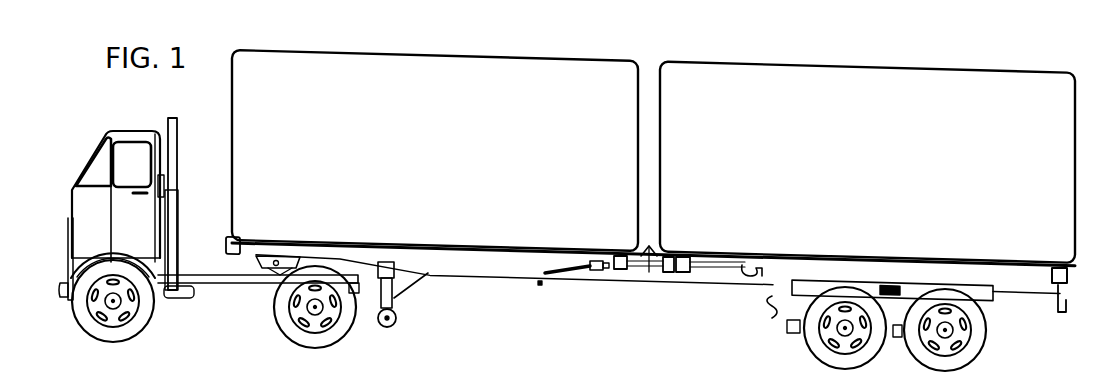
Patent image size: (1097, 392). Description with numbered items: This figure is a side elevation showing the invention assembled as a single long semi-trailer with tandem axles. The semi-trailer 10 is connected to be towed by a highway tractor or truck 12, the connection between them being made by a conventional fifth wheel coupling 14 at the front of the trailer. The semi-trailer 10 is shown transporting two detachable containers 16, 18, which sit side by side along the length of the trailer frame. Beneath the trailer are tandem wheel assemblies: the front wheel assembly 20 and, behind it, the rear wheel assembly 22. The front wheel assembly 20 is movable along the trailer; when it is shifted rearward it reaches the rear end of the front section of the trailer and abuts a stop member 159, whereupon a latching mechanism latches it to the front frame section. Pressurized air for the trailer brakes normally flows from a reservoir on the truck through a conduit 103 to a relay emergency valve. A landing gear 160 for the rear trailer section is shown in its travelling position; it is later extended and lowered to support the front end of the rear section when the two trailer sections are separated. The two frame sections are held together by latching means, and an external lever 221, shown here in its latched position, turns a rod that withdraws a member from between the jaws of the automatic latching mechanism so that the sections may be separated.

The semi-trailer 10 is at (684, 290).
The highway tractor or truck 12 is at (205, 303).
The fifth wheel coupling 14 is at (252, 259).
The detachable container 16 is at (458, 62).
The detachable container 18 is at (881, 72).
The front wheel assembly 20 is at (804, 353).
The rear wheel assembly 22 is at (986, 362).
The conduit 103 is at (647, 262).
The stop member 159 is at (541, 286).
The landing gear 160 is at (728, 272).
The external lever 221 is at (569, 266).